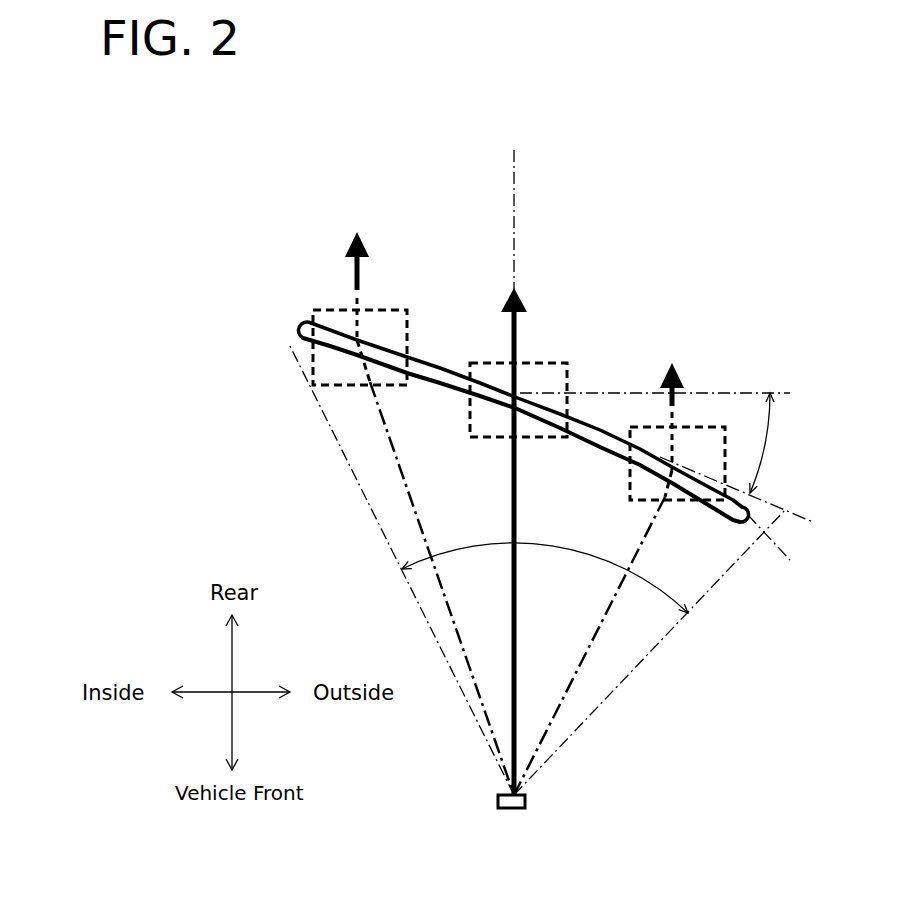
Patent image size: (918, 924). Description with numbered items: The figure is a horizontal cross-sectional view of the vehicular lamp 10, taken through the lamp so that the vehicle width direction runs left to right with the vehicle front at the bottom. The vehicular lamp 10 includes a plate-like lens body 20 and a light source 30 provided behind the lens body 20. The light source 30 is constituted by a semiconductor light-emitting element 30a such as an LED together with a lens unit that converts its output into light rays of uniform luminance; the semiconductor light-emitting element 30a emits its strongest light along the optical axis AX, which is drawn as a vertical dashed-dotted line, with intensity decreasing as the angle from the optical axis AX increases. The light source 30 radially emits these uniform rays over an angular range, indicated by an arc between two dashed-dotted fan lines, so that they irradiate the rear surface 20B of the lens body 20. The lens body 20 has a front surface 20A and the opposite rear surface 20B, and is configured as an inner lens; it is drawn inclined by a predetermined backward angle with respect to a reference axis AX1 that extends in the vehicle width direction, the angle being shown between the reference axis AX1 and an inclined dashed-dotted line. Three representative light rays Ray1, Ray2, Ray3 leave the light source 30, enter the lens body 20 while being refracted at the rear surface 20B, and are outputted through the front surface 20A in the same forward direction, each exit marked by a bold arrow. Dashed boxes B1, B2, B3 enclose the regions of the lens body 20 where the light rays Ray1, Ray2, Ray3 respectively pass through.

The vehicular lamp 10 is at (562, 243).
The lens body 20 is at (524, 420).
The front surface 20A is at (586, 416).
The rear surface 20B is at (579, 453).
The light source 30 is at (544, 828).
The semiconductor light-emitting element 30a is at (517, 810).
The optical axis AX is at (514, 166).
The reference axis AX1 is at (750, 392).
The first beam region B1 is at (323, 309).
The second beam region B2 is at (478, 362).
The third beam region B3 is at (640, 426).
The light ray Ray1 is at (362, 272).
The light ray Ray2 is at (518, 330).
The light ray Ray3 is at (678, 409).